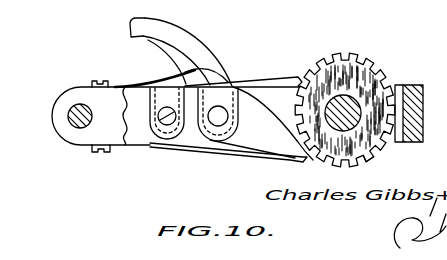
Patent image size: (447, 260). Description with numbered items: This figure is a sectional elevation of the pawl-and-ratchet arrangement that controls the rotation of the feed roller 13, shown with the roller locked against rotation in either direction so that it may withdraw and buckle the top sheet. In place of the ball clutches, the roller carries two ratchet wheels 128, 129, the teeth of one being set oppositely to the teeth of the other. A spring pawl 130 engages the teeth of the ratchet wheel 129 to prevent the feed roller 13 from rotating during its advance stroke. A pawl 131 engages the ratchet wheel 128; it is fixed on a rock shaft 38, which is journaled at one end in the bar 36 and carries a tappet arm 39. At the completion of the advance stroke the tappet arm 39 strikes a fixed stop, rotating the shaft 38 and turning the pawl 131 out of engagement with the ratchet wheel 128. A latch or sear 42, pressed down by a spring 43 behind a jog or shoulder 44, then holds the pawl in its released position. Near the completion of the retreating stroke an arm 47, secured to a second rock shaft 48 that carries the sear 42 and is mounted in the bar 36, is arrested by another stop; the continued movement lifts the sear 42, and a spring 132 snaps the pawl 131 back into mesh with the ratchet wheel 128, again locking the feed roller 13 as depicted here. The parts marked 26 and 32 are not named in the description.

The feed roller 13 is at (342, 53).
The pivot pin 26 is at (88, 122).
The hub 32 is at (325, 116).
The bar 36 is at (61, 110).
The rock shaft 38 is at (218, 108).
The tappet arm 39 is at (204, 44).
The sear 42 is at (152, 112).
The spring 43 is at (152, 80).
The shoulder 44 is at (212, 79).
The arm 47 is at (131, 40).
The rock shaft 48 is at (155, 130).
The ratchet wheel 128 is at (378, 148).
The ratchet wheel 129 is at (376, 68).
The spring pawl 130 is at (282, 80).
The pawl 131 is at (219, 123).
The spring 132 is at (216, 149).